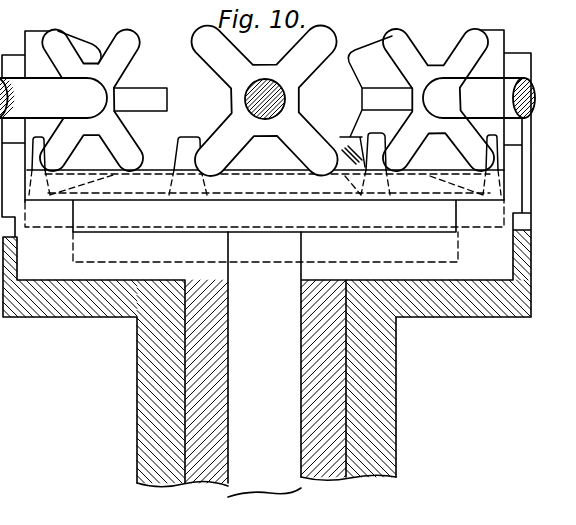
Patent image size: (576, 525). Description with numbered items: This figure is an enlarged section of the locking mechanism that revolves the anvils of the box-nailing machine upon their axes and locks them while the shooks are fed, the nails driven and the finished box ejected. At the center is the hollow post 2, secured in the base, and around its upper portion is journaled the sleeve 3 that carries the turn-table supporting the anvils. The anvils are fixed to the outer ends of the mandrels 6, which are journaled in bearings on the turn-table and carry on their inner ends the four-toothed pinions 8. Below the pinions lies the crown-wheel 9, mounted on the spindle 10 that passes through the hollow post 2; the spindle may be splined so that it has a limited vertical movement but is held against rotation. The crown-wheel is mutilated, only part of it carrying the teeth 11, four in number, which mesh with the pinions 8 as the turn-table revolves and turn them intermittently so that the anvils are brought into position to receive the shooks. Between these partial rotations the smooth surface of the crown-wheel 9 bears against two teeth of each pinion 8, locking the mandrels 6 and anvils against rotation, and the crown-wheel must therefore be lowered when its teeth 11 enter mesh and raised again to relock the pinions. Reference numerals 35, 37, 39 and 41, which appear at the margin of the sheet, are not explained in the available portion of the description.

The hollow post 2 is at (336, 371).
The sleeve 3 is at (386, 442).
The mandrel 6 is at (311, 100).
The four-toothed pinion 8 is at (152, 57).
The crown-wheel 9 is at (306, 190).
The spindle 10 is at (264, 456).
The teeth 11 is at (38, 153).
The part 35 is at (13, 522).
The part 37 is at (0, 420).
The part 39 is at (8, 372).
The part 41 is at (0, 470).